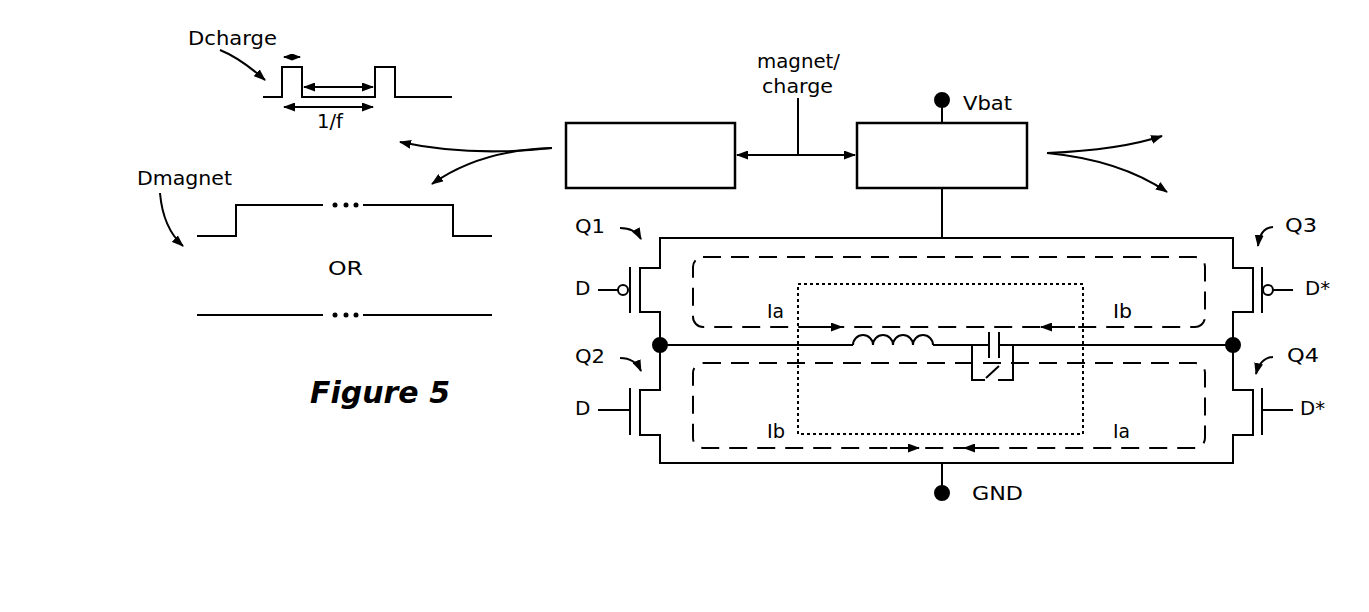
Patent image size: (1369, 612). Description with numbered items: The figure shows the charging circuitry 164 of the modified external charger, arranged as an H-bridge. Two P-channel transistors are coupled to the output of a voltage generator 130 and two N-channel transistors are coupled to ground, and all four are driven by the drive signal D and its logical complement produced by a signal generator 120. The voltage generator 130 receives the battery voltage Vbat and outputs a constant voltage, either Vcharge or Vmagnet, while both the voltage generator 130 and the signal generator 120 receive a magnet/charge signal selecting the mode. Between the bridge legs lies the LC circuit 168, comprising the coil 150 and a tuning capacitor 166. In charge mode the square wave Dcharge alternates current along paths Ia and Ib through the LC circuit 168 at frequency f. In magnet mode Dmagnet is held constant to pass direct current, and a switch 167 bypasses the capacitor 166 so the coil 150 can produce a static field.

The signal generator 120 is at (642, 123).
The voltage generator 130 is at (912, 123).
The coil 150 is at (903, 322).
The charging circuitry 164 is at (1157, 81).
The tuning capacitor 166 is at (993, 323).
The switch 167 is at (988, 385).
The LC circuit 168 is at (797, 300).